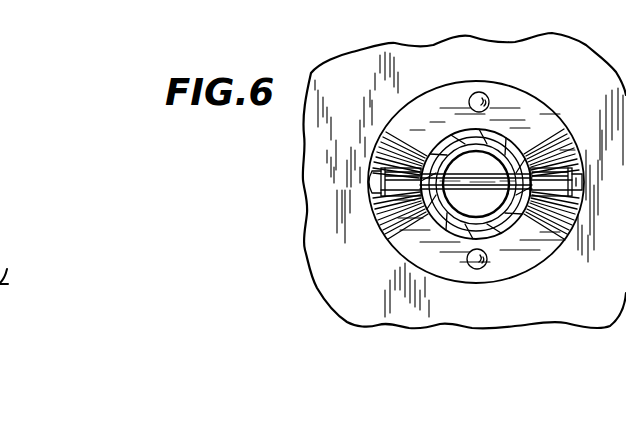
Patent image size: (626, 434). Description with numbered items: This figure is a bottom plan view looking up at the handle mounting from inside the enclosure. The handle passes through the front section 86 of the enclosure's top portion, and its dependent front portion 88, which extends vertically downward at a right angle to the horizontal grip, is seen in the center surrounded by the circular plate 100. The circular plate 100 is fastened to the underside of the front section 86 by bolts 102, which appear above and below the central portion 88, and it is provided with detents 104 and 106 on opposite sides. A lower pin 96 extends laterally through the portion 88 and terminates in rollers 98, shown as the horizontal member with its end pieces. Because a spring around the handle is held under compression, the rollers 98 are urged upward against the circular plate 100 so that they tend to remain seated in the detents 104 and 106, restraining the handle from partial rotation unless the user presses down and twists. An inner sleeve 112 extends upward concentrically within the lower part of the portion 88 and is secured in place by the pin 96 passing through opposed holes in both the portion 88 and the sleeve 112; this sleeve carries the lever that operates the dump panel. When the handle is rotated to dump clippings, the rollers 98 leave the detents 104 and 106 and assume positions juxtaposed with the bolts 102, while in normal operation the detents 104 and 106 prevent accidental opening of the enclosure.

The front section 86 is at (540, 319).
The dependent front portion 88 is at (447, 223).
The lower pin 96 is at (463, 192).
The rollers 98 is at (388, 194).
The circular plate 100 is at (528, 97).
The bolts 102 is at (490, 63).
The detent 104 is at (571, 142).
The detent 106 is at (376, 145).
The inner sleeve 112 is at (450, 138).